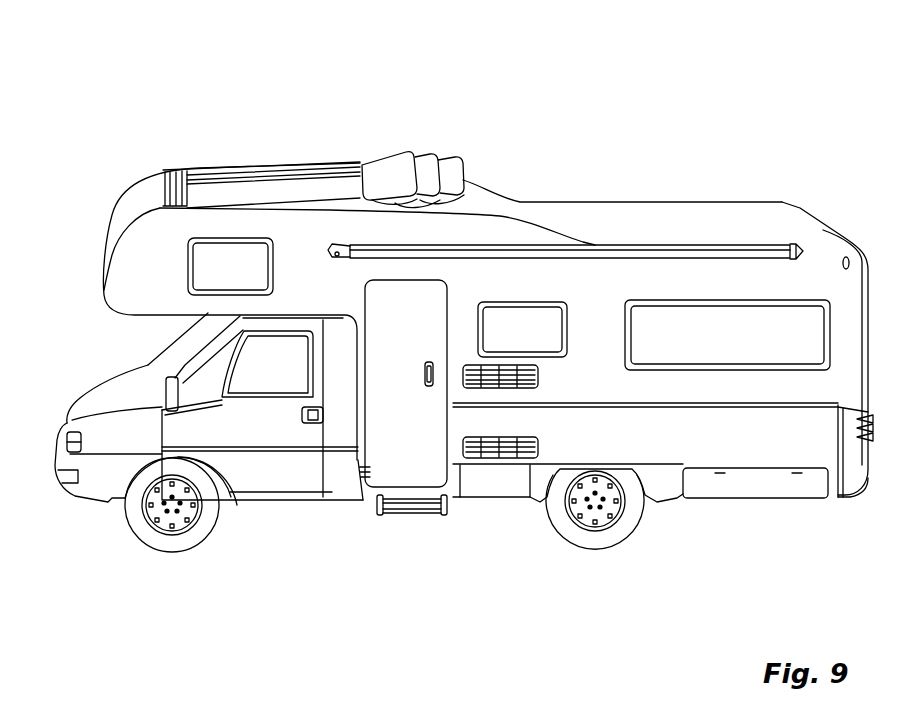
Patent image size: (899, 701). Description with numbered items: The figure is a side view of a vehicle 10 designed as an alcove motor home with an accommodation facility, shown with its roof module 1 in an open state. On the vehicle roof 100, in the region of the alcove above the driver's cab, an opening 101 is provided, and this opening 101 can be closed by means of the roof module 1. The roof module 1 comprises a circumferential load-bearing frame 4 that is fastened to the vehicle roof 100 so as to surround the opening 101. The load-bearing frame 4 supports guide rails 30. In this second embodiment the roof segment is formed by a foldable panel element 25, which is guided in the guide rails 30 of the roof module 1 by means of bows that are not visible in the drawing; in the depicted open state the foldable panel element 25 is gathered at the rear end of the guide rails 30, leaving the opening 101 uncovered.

The vehicle 10 is at (464, 287).
The roof module 1 is at (476, 173).
The load-bearing frame 4 is at (192, 142).
The guide rails 30 is at (241, 166).
The foldable panel element 25 is at (398, 187).
The vehicle roof 100 is at (609, 232).
The opening 101 is at (261, 188).